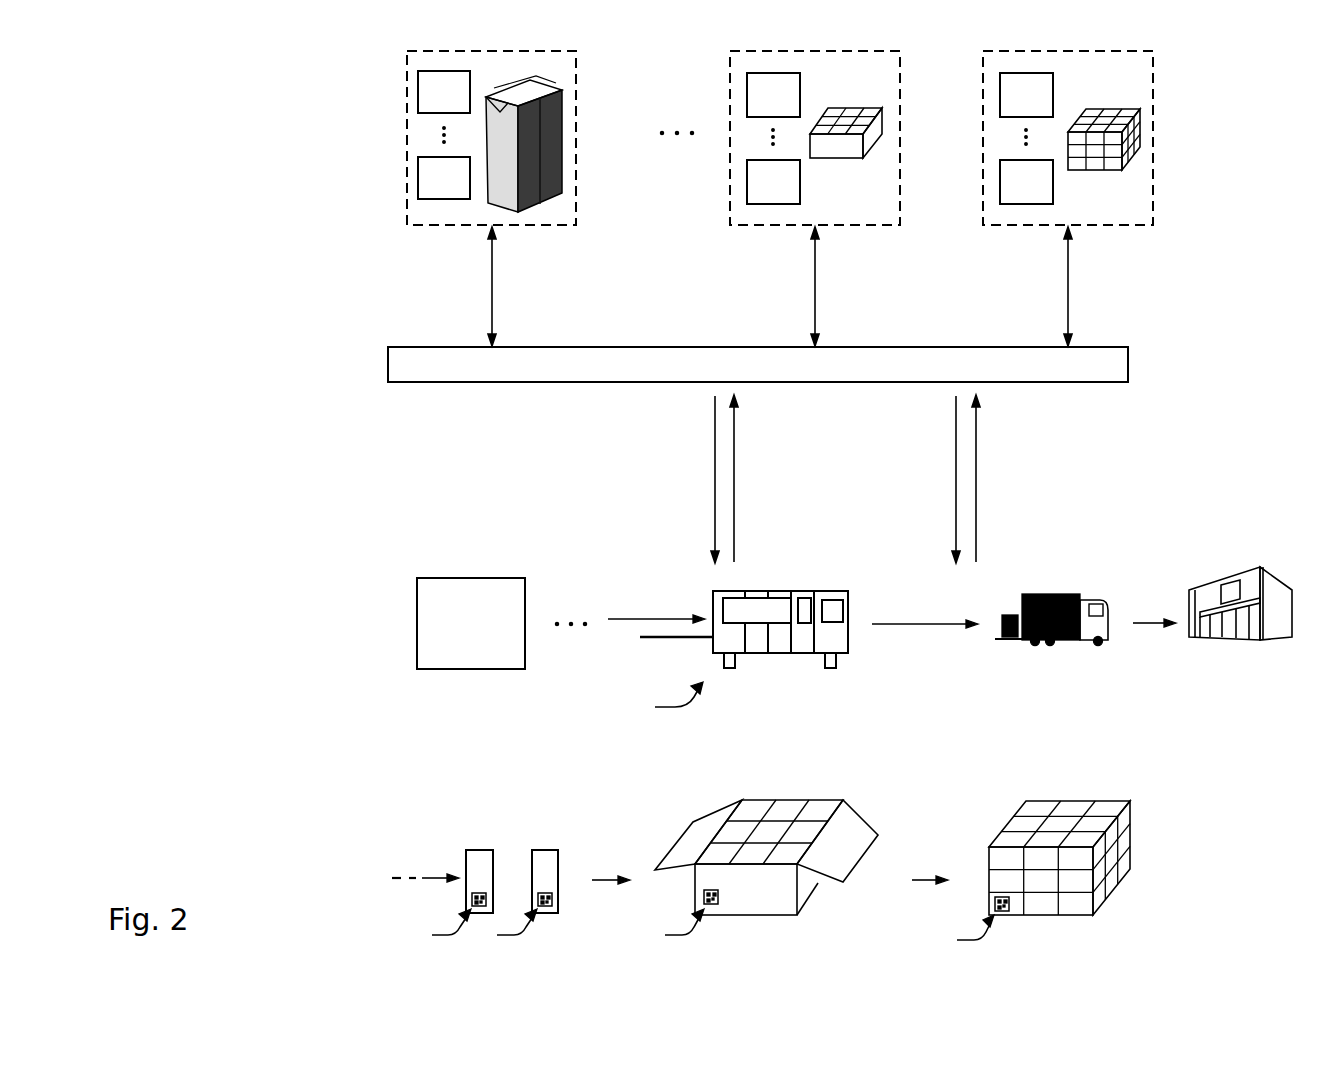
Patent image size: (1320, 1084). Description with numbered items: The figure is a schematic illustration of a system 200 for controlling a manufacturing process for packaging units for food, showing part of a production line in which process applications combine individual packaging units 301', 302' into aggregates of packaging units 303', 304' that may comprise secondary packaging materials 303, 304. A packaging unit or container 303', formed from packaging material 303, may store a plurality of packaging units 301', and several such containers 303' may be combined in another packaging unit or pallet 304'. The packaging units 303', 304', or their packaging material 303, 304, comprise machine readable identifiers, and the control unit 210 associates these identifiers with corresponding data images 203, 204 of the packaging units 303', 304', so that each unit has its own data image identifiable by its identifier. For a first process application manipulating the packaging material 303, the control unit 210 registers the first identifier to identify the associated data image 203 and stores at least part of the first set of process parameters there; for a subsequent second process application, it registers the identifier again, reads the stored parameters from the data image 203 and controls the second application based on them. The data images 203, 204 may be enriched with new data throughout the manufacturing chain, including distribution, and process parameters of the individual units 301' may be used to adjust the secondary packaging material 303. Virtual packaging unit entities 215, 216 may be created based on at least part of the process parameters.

The system 200 is at (245, 153).
The virtual packaging unit entity 215 is at (557, 76).
The virtual packaging unit entity 216 is at (866, 97).
The data image 203 is at (843, 160).
The data image 204 is at (1155, 70).
The control unit 210 is at (758, 364).
The packaging unit 301' is at (570, 843).
The packaging unit 302' is at (622, 827).
The secondary packaging material 303 is at (770, 880).
The packaging unit 303' is at (766, 857).
The secondary packaging material 304 is at (1092, 873).
The pallet 304' is at (1025, 858).